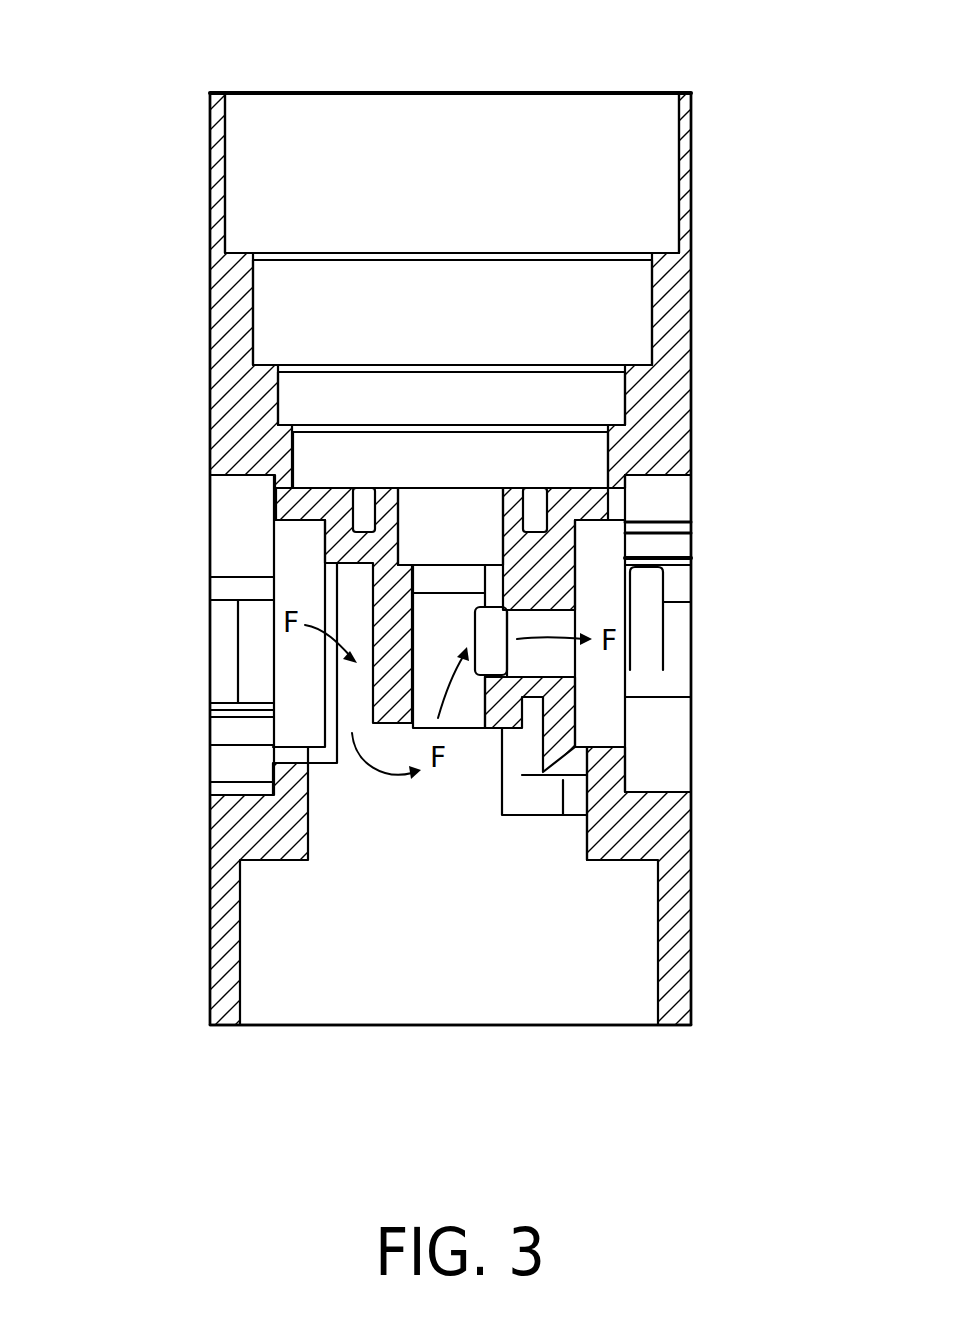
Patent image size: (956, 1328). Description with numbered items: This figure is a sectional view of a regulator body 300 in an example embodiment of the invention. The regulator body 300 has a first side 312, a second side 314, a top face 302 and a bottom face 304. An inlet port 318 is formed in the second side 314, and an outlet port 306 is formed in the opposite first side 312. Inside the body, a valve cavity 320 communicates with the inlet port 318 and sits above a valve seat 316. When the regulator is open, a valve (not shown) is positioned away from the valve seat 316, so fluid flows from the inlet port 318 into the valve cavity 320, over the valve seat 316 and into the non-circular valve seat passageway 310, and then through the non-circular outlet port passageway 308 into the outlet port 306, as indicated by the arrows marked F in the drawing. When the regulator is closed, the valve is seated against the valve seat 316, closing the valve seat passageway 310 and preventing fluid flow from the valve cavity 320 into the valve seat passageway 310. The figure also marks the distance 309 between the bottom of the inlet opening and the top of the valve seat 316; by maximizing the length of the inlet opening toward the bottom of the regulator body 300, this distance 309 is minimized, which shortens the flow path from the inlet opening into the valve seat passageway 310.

The regulator body 300 is at (718, 90).
The top face 302 is at (407, 92).
The bottom face 304 is at (600, 1028).
The outlet port 306 is at (716, 617).
The non-circular outlet port passageway 308 is at (548, 675).
The distance 309 is at (80, 726).
The non-circular valve seat passageway 310 is at (410, 690).
The first side 312 is at (698, 282).
The second side 314 is at (210, 236).
The valve seat 316 is at (528, 697).
The inlet port 318 is at (178, 549).
The valve cavity 320 is at (240, 905).